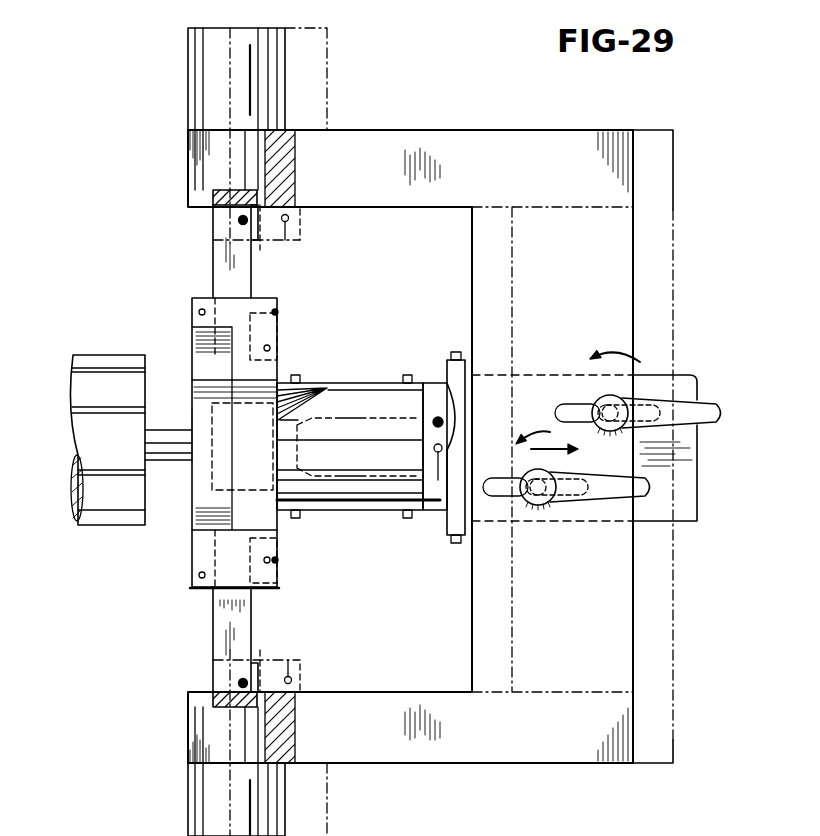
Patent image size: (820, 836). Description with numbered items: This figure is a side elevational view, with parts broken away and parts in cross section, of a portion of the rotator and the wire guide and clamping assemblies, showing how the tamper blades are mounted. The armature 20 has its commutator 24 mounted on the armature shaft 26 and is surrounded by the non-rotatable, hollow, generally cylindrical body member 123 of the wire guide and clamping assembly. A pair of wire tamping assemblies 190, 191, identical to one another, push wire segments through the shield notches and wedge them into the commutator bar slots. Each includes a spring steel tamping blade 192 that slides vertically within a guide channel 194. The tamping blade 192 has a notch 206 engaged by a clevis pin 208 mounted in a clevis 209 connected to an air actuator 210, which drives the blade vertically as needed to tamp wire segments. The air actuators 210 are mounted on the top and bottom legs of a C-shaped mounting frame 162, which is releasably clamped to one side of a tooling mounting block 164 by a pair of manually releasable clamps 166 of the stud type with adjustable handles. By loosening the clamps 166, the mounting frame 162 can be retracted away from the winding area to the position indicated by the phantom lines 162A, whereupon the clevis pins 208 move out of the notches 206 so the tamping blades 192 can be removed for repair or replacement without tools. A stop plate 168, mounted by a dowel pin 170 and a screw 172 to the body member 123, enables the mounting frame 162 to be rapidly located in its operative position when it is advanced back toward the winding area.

The armature 20 is at (80, 385).
The commutator 24 is at (192, 410).
The armature shaft 26 is at (170, 450).
The hollow body member 123 is at (353, 400).
The C-shaped mounting frame 162 is at (458, 128).
The phantom lines 162A is at (660, 128).
The tooling mounting block 164 is at (690, 378).
The manually releasable clamps 166 is at (655, 492).
The stop plate 168 is at (433, 437).
The dowel pin 170 is at (434, 513).
The screw 172 is at (437, 417).
The tamping assembly 190 is at (178, 325).
The tamping assembly 191 is at (180, 576).
The tamping blade 192 is at (220, 268).
The guide channel 194 is at (280, 312).
The notch 206 is at (240, 220).
The clevis pin 208 is at (250, 218).
The clevis 209 is at (215, 196).
The air actuator 210 is at (206, 78).